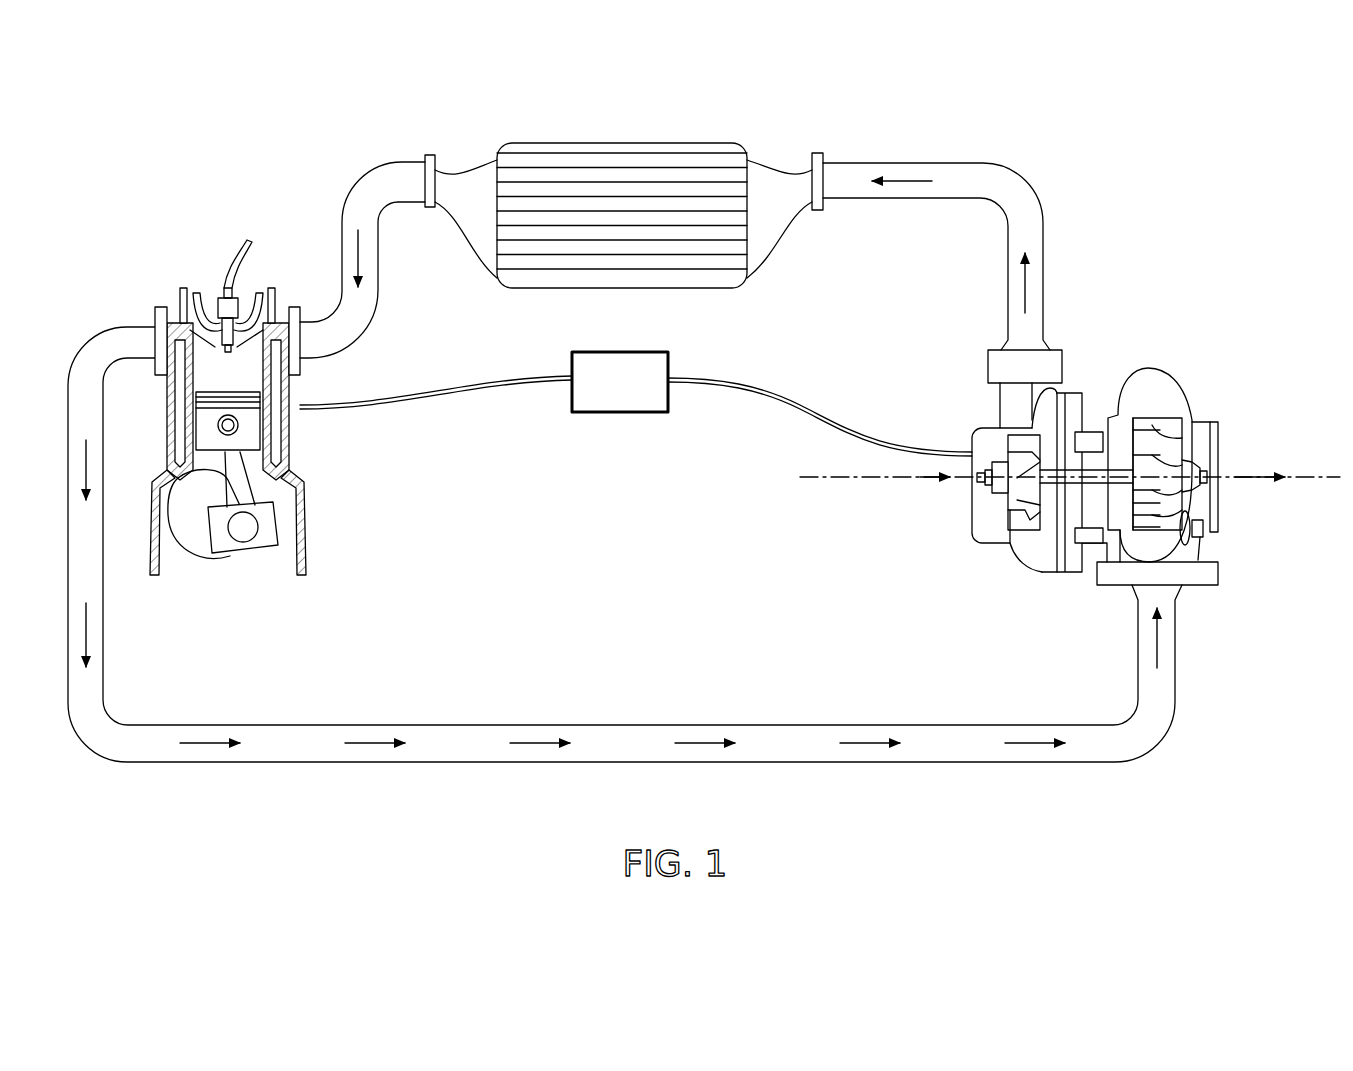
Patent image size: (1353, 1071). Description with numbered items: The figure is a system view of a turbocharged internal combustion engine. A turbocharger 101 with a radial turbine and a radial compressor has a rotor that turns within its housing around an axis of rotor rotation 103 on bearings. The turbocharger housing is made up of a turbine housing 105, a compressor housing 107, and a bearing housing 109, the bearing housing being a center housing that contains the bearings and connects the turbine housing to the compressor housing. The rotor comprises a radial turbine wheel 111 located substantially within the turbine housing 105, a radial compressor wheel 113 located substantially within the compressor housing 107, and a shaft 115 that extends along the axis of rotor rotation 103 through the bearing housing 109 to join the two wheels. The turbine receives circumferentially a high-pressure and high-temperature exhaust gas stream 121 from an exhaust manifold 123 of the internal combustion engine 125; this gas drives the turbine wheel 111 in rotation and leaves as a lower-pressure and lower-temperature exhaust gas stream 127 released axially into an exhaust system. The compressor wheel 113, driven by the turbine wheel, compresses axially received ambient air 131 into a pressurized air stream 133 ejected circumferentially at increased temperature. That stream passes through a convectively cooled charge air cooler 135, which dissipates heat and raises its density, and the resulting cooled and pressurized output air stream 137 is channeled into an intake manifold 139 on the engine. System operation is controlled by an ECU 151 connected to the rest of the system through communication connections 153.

The turbocharger 101 is at (1068, 393).
The axis of rotor rotation 103 is at (1310, 477).
The turbine housing 105 is at (1185, 400).
The compressor housing 107 is at (970, 433).
The bearing housing 109 is at (1092, 430).
The radial turbine wheel 111 is at (1153, 465).
The radial compressor wheel 113 is at (1012, 500).
The shaft 115 is at (1092, 487).
The exhaust gas stream 121 is at (702, 742).
The exhaust manifold 123 is at (178, 310).
The internal combustion engine 125 is at (255, 440).
The lower-pressure and lower-temperature exhaust gas stream 127 is at (1243, 477).
The ambient air 131 is at (818, 487).
The pressurized air stream 133 is at (905, 180).
The charge air cooler 135 is at (620, 158).
The cooled and pressurized output air stream 137 is at (358, 255).
The intake manifold 139 is at (300, 362).
The ECU 151 is at (622, 352).
The communication connections 153 is at (752, 397).